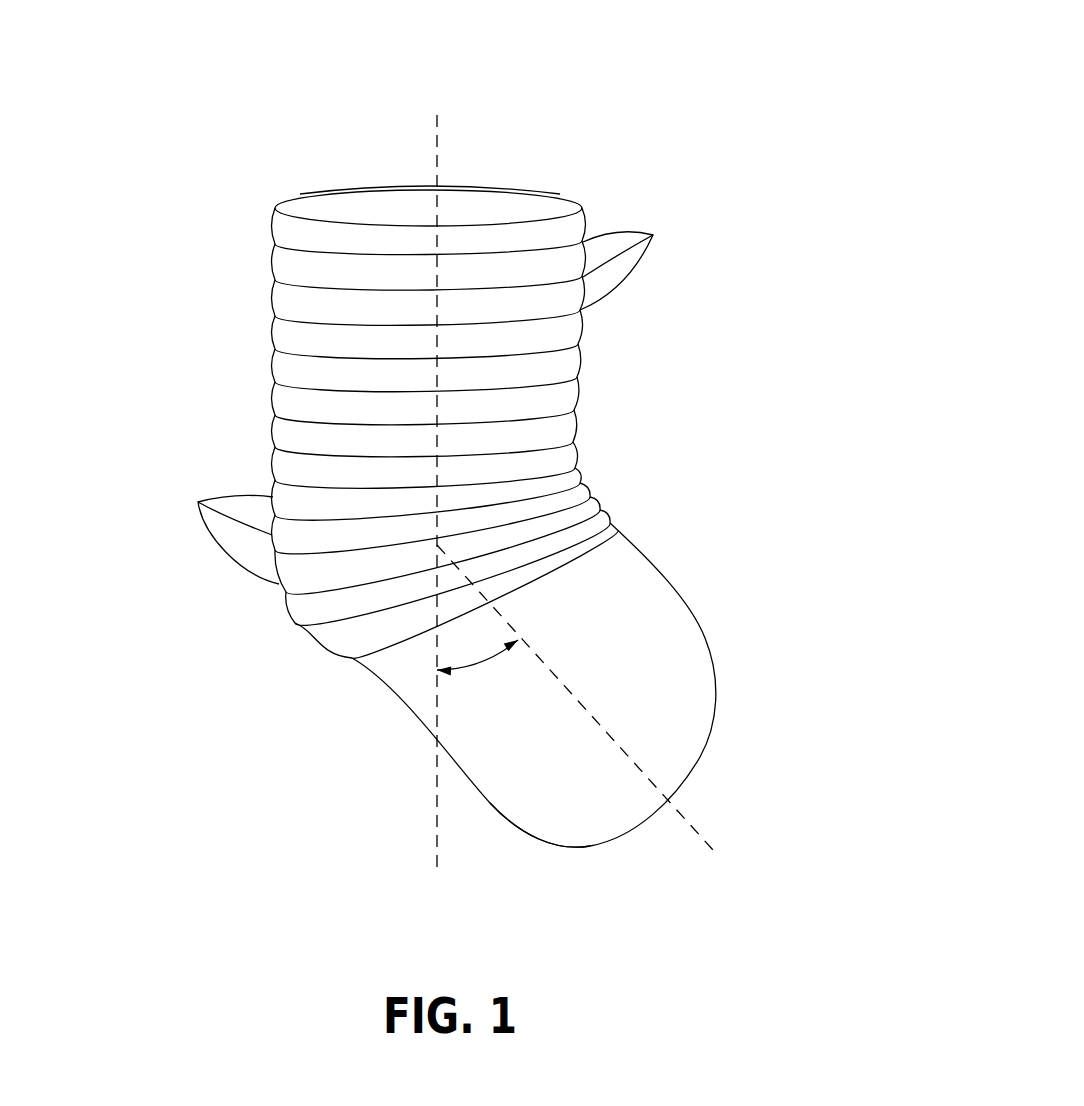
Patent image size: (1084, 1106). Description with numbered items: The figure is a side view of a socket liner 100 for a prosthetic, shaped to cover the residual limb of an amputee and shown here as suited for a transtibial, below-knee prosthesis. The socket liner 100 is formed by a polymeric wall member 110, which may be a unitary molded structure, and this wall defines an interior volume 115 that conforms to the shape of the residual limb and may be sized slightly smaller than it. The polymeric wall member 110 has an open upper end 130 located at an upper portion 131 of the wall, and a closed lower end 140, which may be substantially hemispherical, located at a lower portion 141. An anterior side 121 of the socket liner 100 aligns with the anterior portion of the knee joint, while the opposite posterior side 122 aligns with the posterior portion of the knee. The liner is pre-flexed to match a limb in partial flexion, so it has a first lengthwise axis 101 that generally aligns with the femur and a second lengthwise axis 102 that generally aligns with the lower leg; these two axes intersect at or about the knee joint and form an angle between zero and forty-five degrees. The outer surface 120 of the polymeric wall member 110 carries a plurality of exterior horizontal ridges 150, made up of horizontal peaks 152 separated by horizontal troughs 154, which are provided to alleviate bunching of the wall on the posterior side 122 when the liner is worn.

The socket liner 100 is at (610, 53).
The first lengthwise axis 101 is at (437, 772).
The second lengthwise axis 102 is at (693, 827).
The polymeric wall member 110 is at (548, 410).
The interior volume 115 is at (479, 193).
The outer surface 120 is at (310, 398).
The anterior side 121 is at (176, 672).
The posterior side 122 is at (651, 458).
The open upper end 130 is at (383, 190).
The upper portion 131 is at (310, 267).
The closed lower end 140 is at (690, 710).
The lower portion 141 is at (557, 792).
The exterior horizontal ridges 150 is at (218, 534).
The horizontal peaks 152 is at (293, 624).
The horizontal troughs 154 is at (635, 262).